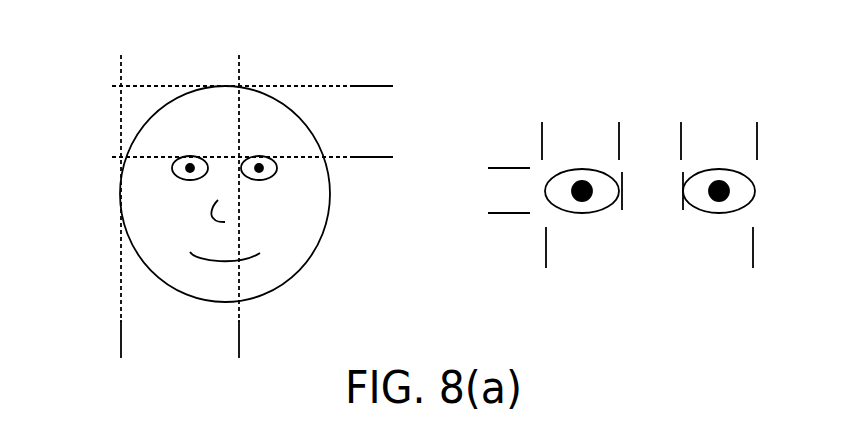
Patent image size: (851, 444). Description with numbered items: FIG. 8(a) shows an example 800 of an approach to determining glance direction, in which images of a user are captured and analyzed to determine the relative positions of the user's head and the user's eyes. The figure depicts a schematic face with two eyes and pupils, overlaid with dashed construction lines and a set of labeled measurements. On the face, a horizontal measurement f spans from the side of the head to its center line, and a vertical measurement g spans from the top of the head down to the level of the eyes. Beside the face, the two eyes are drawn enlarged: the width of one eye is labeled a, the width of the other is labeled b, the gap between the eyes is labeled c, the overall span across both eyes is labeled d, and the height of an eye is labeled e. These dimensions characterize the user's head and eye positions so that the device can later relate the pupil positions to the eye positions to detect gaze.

The example 800 is at (60, 86).
The left eye width a is at (619, 142).
The right eye width b is at (757, 142).
The distance between eyes c is at (683, 192).
The outer eye span d is at (753, 248).
The eye height e is at (509, 168).
The half face width f is at (239, 337).
The forehead height g is at (373, 86).